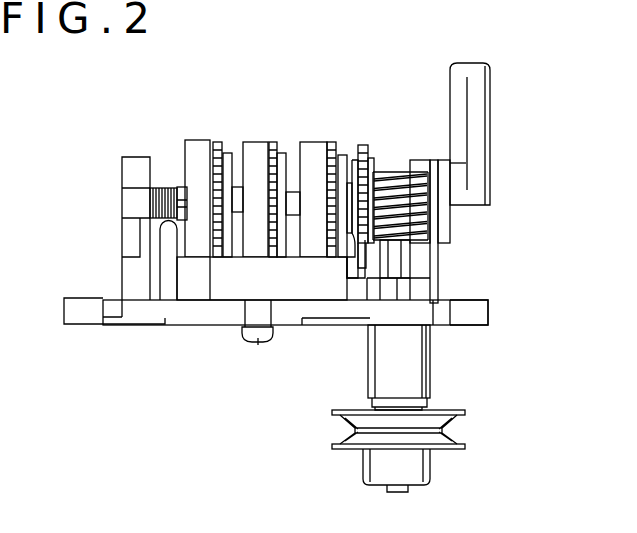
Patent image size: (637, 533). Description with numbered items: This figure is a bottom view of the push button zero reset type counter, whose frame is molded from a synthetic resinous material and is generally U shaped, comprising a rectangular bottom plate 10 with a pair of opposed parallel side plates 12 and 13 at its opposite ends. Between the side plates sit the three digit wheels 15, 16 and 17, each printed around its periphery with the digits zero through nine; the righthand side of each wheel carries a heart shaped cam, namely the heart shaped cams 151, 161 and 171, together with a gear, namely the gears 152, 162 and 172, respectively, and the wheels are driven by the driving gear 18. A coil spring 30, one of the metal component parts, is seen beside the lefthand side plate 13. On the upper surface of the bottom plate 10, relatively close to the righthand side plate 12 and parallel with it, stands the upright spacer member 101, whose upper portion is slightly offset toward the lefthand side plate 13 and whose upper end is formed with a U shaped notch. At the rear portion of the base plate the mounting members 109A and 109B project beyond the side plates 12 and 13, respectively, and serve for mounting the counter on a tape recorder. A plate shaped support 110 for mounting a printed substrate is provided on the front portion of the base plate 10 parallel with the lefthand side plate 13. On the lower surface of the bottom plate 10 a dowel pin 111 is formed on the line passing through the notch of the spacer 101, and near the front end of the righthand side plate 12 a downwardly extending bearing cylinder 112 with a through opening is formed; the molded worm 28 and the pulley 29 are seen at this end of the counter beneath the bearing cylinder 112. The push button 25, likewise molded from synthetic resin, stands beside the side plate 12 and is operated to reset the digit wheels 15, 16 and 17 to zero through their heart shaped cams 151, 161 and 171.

The bottom plate 10 is at (212, 318).
The side plate 12 is at (438, 273).
The side plate 13 is at (128, 270).
The digit wheel 15 is at (311, 142).
The digit wheel 16 is at (247, 142).
The digit wheel 17 is at (186, 142).
The driving gear 18 is at (366, 147).
The push button 25 is at (481, 156).
The worm 28 is at (413, 255).
The pulley 29 is at (422, 465).
The coil spring 30 is at (160, 184).
The spacer member 101 is at (358, 280).
The mounting member 109A is at (483, 317).
The mounting member 109B is at (80, 318).
The plate shaped support 110 is at (173, 280).
The dowel pin 111 is at (258, 345).
The bearing cylinder 112 is at (430, 372).
The heart shaped cam 151 is at (341, 155).
The gear 152 is at (334, 142).
The heart shaped cam 161 is at (282, 153).
The gear 162 is at (273, 142).
The heart shaped cam 171 is at (229, 150).
The gear 172 is at (218, 142).